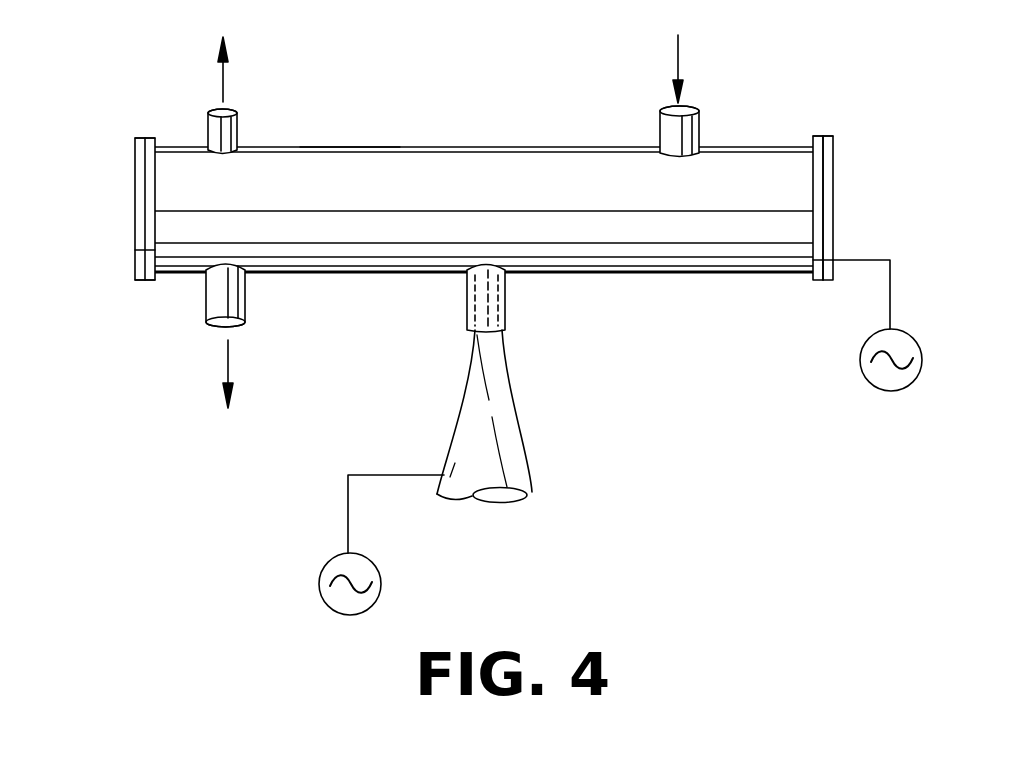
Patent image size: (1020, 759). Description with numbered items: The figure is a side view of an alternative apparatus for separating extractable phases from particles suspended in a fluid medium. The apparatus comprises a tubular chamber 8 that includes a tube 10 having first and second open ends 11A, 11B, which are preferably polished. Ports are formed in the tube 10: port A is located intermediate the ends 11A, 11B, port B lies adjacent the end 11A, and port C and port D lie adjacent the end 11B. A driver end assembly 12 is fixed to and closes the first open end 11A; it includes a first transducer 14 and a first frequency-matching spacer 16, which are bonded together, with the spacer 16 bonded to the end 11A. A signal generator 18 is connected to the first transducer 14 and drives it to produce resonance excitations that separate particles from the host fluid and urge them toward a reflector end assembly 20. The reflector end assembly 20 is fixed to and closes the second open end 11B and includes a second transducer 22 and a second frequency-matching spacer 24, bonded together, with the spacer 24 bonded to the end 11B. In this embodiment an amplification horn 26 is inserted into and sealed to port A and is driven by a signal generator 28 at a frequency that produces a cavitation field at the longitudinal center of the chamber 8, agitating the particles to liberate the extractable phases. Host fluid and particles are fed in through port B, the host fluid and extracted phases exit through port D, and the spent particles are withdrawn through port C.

The tubular chamber 8 is at (438, 122).
The tube 10 is at (613, 272).
The first open end 11A is at (815, 186).
The second open end 11B is at (155, 191).
The driver end assembly 12 is at (838, 115).
The first transducer 14 is at (832, 232).
The first frequency-matching spacer 16 is at (812, 280).
The signal generator 18 is at (860, 365).
The reflector end assembly 20 is at (128, 116).
The second transducer 22 is at (135, 255).
The second frequency-matching spacer 24 is at (152, 282).
The amplification horn 26 is at (523, 455).
The signal generator 28 is at (320, 571).
The suspension inlet A is at (506, 304).
The clarified fluid outlet B is at (696, 96).
The particle outlet C is at (240, 336).
The flushing inlet/gas outlet port D is at (235, 95).